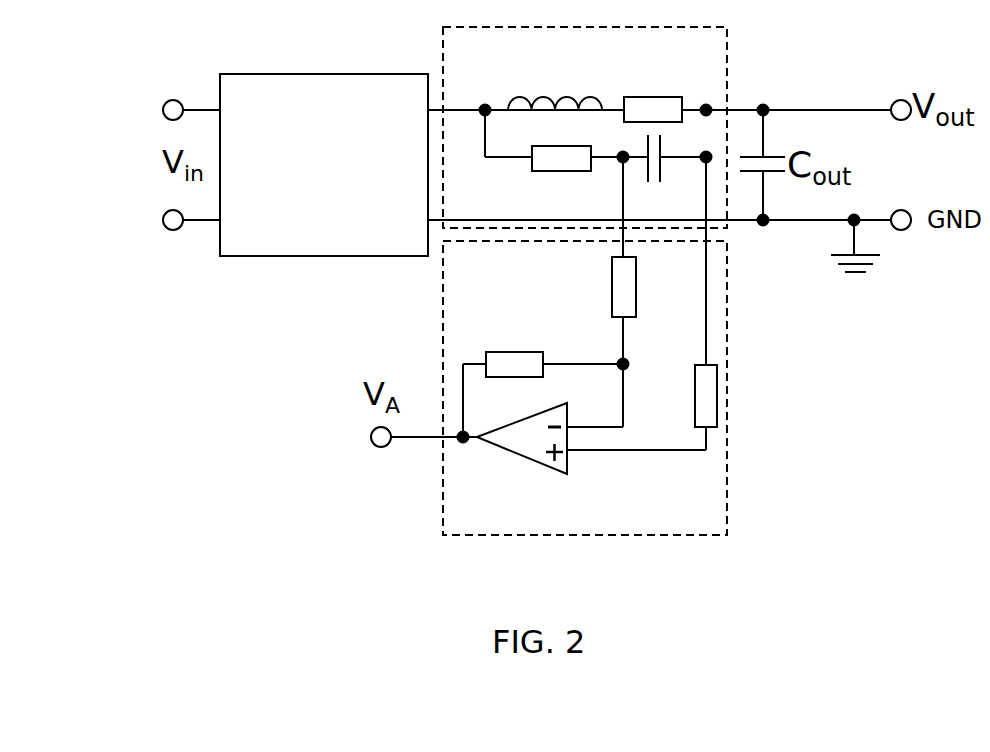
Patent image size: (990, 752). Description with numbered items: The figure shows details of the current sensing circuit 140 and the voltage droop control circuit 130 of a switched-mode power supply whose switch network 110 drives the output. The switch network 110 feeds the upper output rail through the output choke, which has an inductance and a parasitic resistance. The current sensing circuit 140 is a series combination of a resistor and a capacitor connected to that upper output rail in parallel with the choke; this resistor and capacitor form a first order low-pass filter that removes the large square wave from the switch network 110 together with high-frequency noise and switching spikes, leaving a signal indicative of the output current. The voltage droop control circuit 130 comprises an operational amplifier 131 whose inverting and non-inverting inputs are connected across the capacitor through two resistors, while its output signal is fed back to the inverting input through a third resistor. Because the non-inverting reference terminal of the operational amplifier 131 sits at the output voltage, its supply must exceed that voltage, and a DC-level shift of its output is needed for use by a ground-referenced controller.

The switch network 110 is at (312, 257).
The current sensing circuit 140 is at (727, 53).
The voltage droop control circuit 130 is at (631, 346).
The operational amplifier 131 is at (520, 457).